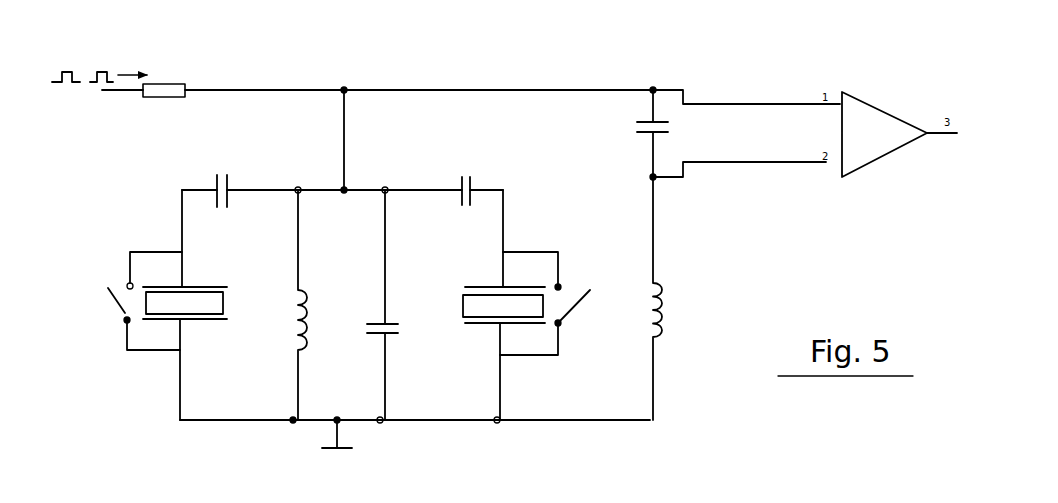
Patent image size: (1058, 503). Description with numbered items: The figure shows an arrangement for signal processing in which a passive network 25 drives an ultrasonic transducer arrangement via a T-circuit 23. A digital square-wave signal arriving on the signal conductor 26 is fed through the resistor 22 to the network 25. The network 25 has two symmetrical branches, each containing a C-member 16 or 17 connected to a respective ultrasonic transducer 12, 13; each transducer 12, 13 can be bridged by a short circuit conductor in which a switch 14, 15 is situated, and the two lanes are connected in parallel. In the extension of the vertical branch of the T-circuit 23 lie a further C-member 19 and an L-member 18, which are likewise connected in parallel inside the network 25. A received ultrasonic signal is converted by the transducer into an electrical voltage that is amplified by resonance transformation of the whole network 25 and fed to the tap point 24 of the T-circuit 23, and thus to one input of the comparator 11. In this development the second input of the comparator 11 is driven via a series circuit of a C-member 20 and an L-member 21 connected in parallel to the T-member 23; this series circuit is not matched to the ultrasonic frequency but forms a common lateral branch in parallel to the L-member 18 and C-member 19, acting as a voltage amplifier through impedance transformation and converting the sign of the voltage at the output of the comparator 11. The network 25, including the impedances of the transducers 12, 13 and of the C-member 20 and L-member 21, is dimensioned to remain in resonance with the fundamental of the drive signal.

The comparator 11 is at (880, 113).
The ultrasonic transducer 12 is at (210, 310).
The ultrasonic transducer 13 is at (475, 305).
The switch 14 is at (110, 283).
The switch 15 is at (572, 278).
The C-member 16 is at (228, 186).
The C-member 17 is at (489, 167).
The L-member 18 is at (307, 330).
The C-member 19 is at (400, 334).
The C-member 20 is at (672, 120).
The L-member 21 is at (657, 320).
The resistor 22 is at (175, 84).
The T-circuit 23 is at (348, 128).
The tap point 24 is at (346, 87).
The passive network 25 is at (545, 160).
The signal conductor 26 is at (106, 58).